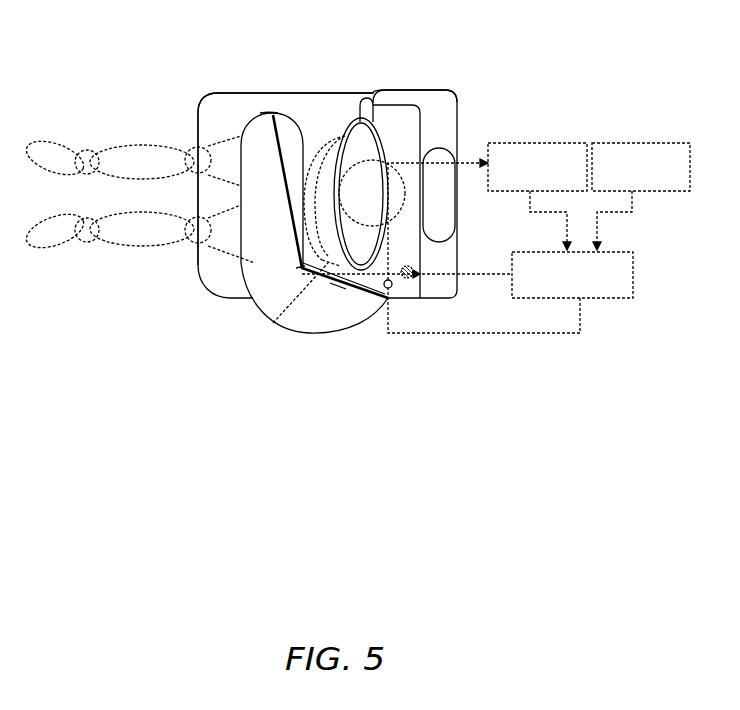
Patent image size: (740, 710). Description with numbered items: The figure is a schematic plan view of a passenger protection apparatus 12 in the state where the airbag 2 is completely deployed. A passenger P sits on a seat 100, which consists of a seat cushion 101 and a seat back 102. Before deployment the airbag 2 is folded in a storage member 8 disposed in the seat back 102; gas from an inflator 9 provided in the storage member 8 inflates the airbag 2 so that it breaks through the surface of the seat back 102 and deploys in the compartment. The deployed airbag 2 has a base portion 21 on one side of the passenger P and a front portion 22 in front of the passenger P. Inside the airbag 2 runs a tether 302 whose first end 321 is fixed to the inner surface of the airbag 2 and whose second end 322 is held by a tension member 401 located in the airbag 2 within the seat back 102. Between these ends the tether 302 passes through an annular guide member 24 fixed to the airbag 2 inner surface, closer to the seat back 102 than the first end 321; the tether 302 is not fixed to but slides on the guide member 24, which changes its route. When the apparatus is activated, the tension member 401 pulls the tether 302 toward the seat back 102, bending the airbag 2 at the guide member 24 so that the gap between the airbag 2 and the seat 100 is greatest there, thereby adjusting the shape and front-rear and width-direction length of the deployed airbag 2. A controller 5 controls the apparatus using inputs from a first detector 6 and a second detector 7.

The passenger protection apparatus 12 is at (183, 85).
The airbag 2 is at (290, 112).
The seat 100 is at (460, 112).
The seat cushion 101 is at (233, 92).
The seat back 102 is at (447, 105).
The passenger P is at (367, 100).
The tension member 401 is at (402, 270).
The front portion 22 is at (241, 268).
The base portion 21 is at (318, 315).
The first end 321 is at (262, 113).
The second end 322 is at (378, 268).
The guide member 24 is at (298, 272).
The tether 302 is at (338, 287).
The inflator 9 is at (391, 290).
The storage member 8 is at (412, 279).
The second detector 7 is at (568, 143).
The first detector 6 is at (663, 143).
The controller 5 is at (633, 272).